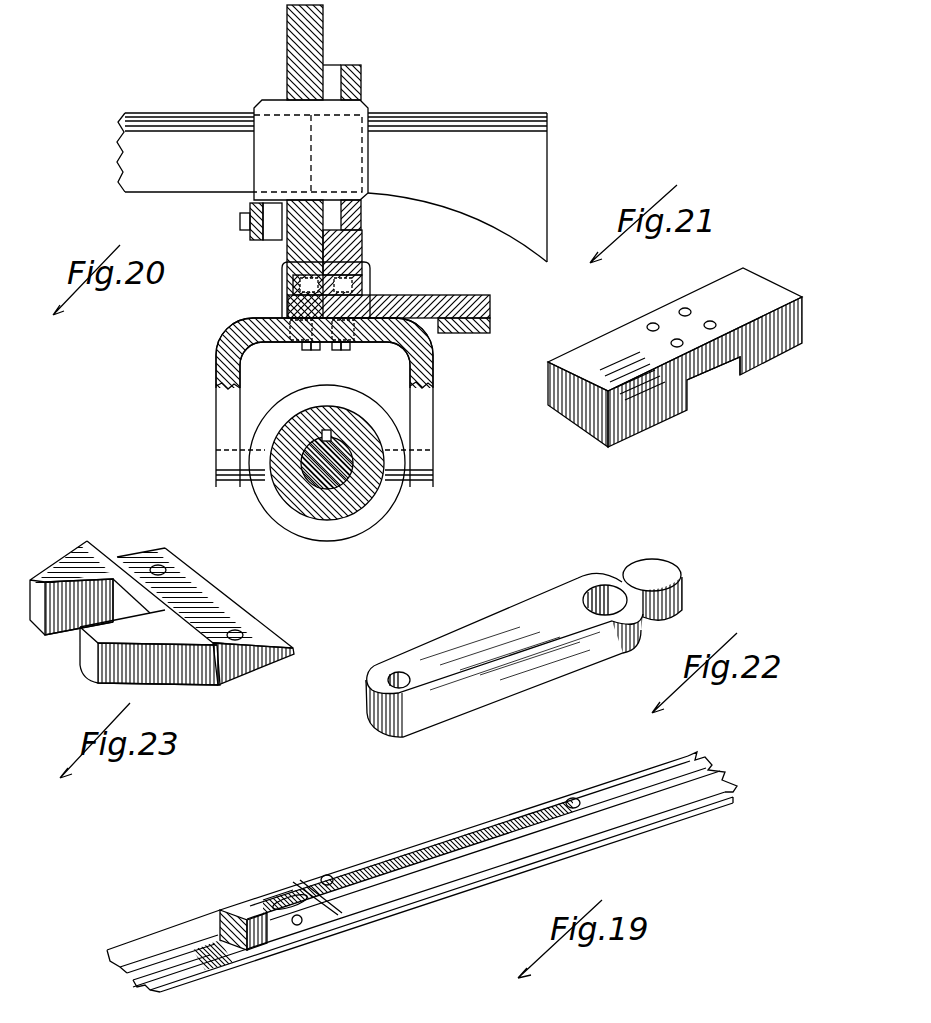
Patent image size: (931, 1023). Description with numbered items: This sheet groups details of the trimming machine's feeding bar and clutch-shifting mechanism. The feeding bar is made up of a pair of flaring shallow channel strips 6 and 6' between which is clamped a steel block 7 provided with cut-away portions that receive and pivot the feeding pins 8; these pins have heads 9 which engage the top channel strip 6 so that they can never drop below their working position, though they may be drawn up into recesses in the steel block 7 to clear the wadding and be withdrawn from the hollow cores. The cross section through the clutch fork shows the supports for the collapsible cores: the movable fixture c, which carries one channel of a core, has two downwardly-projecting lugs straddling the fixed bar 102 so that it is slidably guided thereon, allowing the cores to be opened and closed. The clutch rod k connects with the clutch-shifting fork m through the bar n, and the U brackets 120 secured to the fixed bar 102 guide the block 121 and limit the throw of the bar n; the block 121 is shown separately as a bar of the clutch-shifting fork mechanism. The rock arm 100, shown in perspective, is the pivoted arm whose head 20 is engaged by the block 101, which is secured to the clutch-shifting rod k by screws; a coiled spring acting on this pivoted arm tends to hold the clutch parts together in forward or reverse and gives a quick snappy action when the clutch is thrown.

In FIG. 20, the heads 9 is at (317, 32).
In FIG. 20, the fixture c is at (253, 150).
In FIG. 20, the fixed bar 102 is at (288, 250).
In FIG. 20, the U brackets 120 is at (372, 282).
In FIG. 20, the block 121 is at (260, 296).
In FIG. 21, the block 121 is at (760, 352).
In FIG. 20, the bar n is at (423, 300).
In FIG. 20, the clutch rod k is at (490, 327).
In FIG. 20, the clutch-shifting fork m is at (432, 372).
In FIG. 23, the block 101 is at (193, 665).
In FIG. 22, the rock arm 100 is at (483, 620).
In FIG. 22, the head 20 is at (667, 567).
In FIG. 19, the channel strip 6 is at (478, 850).
In FIG. 19, the steel block 7 is at (245, 910).
In FIG. 19, the channel strip 6' is at (170, 939).
In FIG. 19, the feeding pins 8 is at (257, 970).